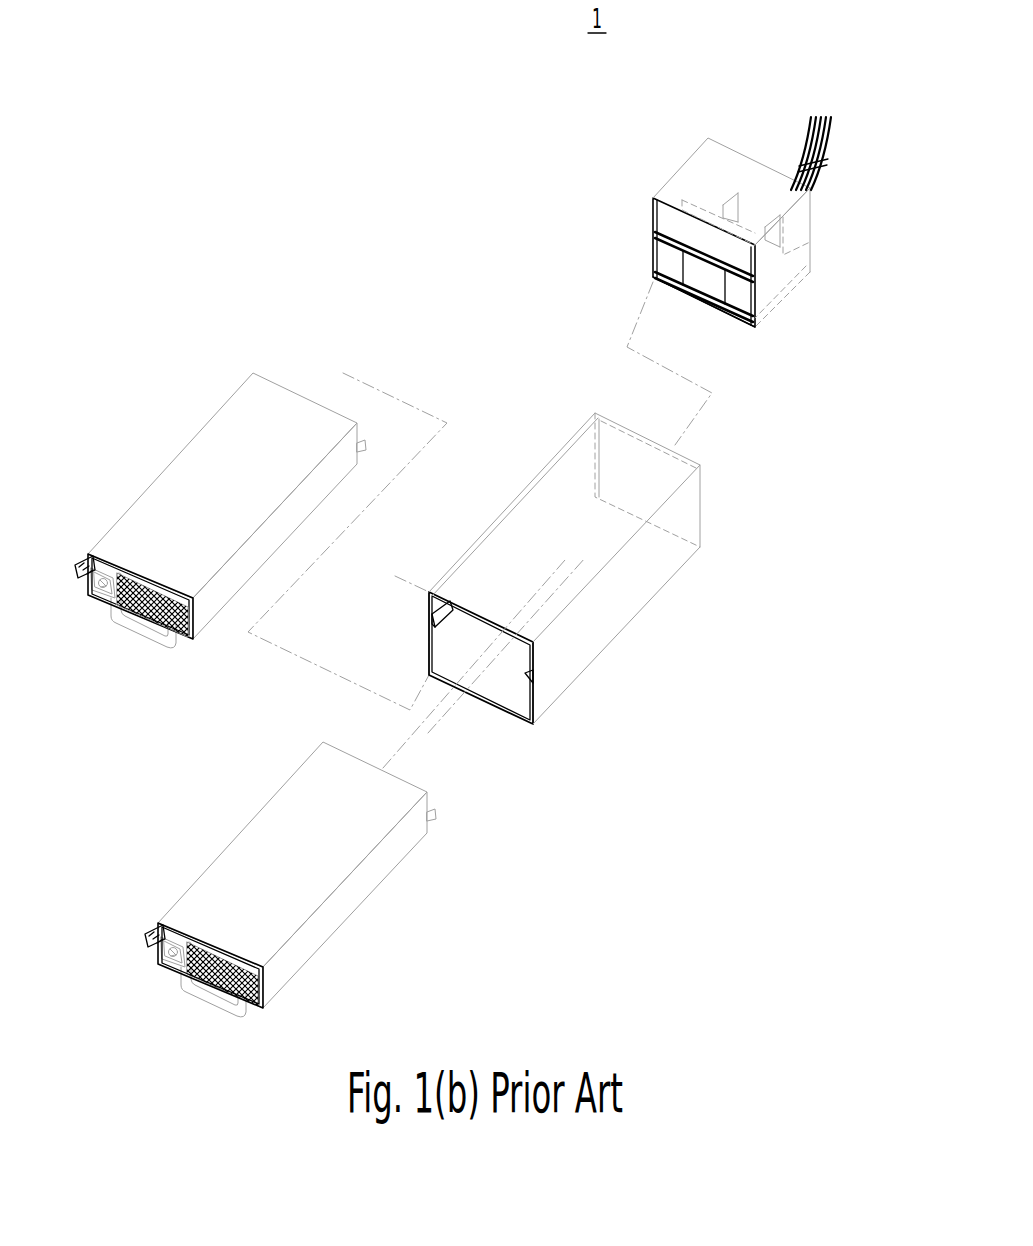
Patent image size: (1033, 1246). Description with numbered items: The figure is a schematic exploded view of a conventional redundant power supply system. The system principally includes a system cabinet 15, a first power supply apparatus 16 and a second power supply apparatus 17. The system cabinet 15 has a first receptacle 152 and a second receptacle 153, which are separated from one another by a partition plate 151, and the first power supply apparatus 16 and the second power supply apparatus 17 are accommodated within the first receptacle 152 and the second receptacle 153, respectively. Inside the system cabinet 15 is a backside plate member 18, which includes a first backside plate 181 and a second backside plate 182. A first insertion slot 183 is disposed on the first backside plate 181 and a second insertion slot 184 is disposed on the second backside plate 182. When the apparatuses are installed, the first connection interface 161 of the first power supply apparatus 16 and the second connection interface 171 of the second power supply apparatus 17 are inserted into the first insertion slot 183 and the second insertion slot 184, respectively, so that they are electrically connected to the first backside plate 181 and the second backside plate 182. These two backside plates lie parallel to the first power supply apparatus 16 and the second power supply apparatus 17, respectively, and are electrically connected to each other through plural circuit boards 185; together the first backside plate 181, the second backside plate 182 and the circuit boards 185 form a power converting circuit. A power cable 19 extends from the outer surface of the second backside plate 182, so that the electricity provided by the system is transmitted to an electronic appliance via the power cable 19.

The system cabinet 15 is at (793, 310).
The partition plate 151 is at (435, 621).
The first receptacle 152 is at (480, 627).
The second receptacle 153 is at (515, 688).
The first power supply apparatus 16 is at (180, 490).
The first connection interface 161 is at (362, 447).
The second power supply apparatus 17 is at (250, 860).
The second connection interface 171 is at (432, 813).
The backside plate member 18 is at (573, 205).
The first backside plate 181 is at (670, 227).
The second backside plate 182 is at (668, 267).
The first insertion slot 183 is at (756, 258).
The second insertion slot 184 is at (718, 310).
The circuit boards 185 is at (768, 222).
The power cable 19 is at (805, 131).